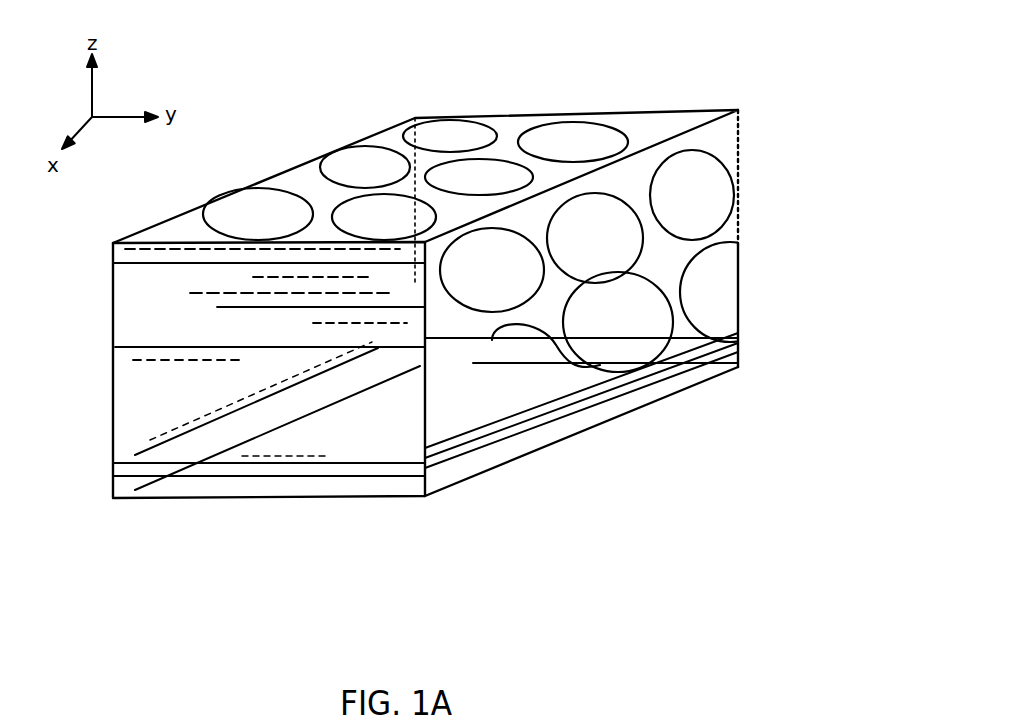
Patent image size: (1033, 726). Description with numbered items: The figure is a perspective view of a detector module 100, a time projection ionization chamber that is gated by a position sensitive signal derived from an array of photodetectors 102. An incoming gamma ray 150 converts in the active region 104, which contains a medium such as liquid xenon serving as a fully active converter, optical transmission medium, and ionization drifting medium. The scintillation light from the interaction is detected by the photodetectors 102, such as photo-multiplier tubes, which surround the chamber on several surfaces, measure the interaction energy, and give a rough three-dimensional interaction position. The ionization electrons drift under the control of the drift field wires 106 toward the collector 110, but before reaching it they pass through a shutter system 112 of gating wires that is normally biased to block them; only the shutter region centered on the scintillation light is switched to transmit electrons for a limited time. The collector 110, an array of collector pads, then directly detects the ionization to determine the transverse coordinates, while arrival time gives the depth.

The detector module 100 is at (132, 560).
The photodetectors 102 is at (348, 155).
The active region 104 is at (381, 345).
The drift field wires 106 is at (695, 112).
The collector 110 is at (359, 455).
The shutter system 112 is at (762, 326).
The gamma ray 150 is at (462, 512).